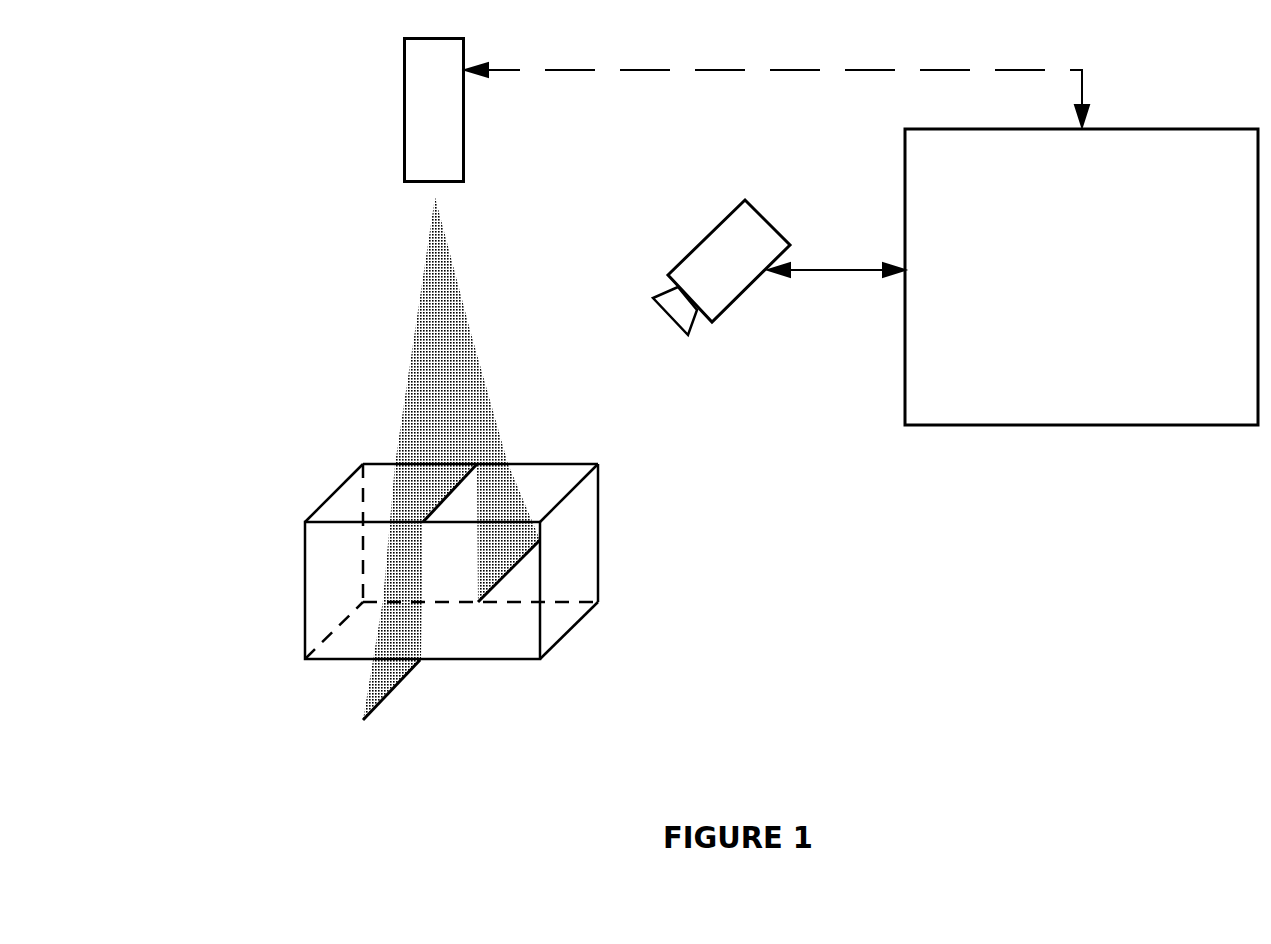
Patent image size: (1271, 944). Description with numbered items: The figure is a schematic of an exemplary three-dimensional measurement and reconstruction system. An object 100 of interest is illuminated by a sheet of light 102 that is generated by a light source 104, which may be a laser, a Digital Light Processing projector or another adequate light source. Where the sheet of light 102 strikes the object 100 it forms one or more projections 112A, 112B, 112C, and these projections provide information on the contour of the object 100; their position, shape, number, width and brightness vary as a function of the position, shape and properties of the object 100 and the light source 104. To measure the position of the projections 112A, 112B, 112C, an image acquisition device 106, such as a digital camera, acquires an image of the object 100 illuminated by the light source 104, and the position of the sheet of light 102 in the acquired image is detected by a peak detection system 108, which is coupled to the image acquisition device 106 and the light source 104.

The object 100 is at (337, 487).
The sheet of light 102 is at (415, 347).
The light source 104 is at (403, 106).
The image acquisition device 106 is at (706, 236).
The peak detection system 108 is at (1123, 427).
The projection 112A is at (423, 522).
The projection 112B is at (398, 688).
The projection 112C is at (503, 577).